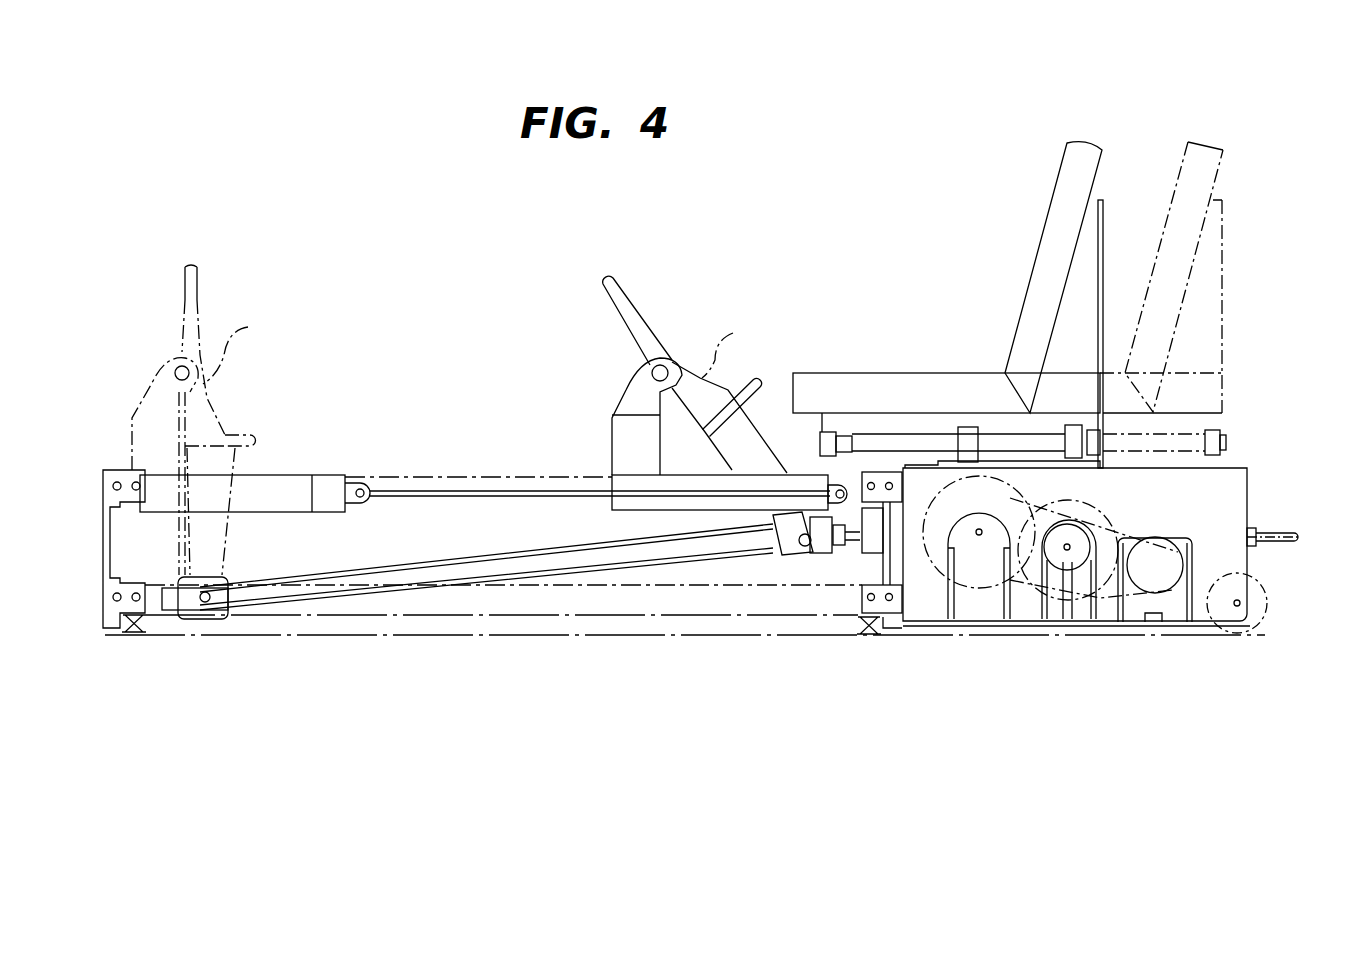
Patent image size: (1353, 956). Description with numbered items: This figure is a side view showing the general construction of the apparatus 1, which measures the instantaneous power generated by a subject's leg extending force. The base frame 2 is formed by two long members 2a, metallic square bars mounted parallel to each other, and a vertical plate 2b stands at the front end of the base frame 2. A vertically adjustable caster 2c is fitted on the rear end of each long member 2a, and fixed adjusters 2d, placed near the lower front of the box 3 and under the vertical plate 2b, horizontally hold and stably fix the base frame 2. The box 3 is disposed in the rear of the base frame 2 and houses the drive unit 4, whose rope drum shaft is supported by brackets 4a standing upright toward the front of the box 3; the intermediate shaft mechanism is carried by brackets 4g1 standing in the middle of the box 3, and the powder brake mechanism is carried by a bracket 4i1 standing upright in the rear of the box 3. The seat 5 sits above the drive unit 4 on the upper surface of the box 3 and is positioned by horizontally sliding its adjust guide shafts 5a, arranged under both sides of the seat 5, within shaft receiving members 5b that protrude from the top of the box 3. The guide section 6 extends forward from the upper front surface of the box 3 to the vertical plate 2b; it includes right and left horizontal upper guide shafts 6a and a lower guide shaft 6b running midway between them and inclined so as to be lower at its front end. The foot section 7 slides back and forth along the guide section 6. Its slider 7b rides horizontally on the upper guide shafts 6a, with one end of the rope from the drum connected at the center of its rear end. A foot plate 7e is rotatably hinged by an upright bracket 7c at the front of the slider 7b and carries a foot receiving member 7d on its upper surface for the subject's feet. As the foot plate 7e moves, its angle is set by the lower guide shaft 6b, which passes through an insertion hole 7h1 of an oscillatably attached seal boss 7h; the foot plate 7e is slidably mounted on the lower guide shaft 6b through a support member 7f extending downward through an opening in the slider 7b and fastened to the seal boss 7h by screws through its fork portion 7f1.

The apparatus 1 is at (478, 392).
The base frame 2 is at (497, 618).
The long members 2a is at (603, 618).
The vertical plate 2b is at (103, 547).
The vertically adjustable caster 2c is at (1267, 613).
The fixed adjusters 2d is at (140, 632).
The box 3 is at (1252, 514).
The drive unit 4 is at (1100, 583).
The brackets 4a is at (990, 605).
The brackets 4g1 is at (1060, 610).
The bracket 4i1 is at (1155, 603).
The seat 5 is at (1046, 305).
The adjust guide shafts 5a is at (903, 447).
The shaft receiving members 5b is at (968, 425).
The guide section 6 is at (493, 483).
The upper guide shafts 6a is at (528, 478).
The lower guide shaft 6b is at (330, 572).
The foot section 7 is at (447, 442).
The slider 7b is at (797, 467).
The lever support bracket 7c is at (628, 405).
The foot receiving member 7d is at (672, 348).
The foot plate 7e is at (630, 303).
The support member 7f is at (748, 450).
The fork portion 7f1 is at (782, 522).
The seal boss 7h is at (815, 550).
The insertion hole 7h1 is at (798, 535).